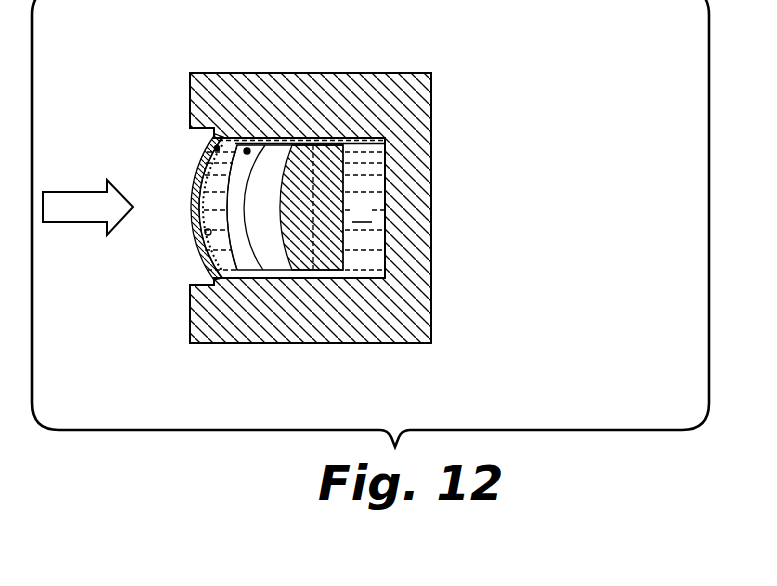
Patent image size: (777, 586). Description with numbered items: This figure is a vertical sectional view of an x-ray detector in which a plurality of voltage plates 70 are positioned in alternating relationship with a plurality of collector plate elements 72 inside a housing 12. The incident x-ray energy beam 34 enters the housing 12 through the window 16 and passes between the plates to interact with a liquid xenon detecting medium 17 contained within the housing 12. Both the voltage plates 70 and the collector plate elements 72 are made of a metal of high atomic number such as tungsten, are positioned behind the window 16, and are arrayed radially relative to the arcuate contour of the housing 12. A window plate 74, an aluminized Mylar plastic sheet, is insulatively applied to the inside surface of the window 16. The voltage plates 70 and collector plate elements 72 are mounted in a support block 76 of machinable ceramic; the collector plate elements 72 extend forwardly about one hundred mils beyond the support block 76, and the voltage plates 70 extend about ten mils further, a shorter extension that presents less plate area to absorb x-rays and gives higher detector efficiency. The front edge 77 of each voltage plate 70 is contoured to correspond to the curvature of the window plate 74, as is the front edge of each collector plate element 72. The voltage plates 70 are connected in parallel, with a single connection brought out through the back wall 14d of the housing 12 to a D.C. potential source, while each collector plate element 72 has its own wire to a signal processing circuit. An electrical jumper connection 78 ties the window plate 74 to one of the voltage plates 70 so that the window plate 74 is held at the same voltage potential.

The housing 12 is at (282, 343).
The back wall 14d is at (432, 178).
The window 16 is at (201, 260).
The liquid xenon detecting medium 17 is at (365, 211).
The incident x-ray energy beam 34 is at (73, 192).
The voltage plates 70 is at (210, 168).
The collector plate elements 72 is at (292, 143).
The window plate 74 is at (205, 232).
The support block 76 is at (337, 143).
The front edge 77 is at (193, 186).
The electrical jumper connection 78 is at (247, 150).